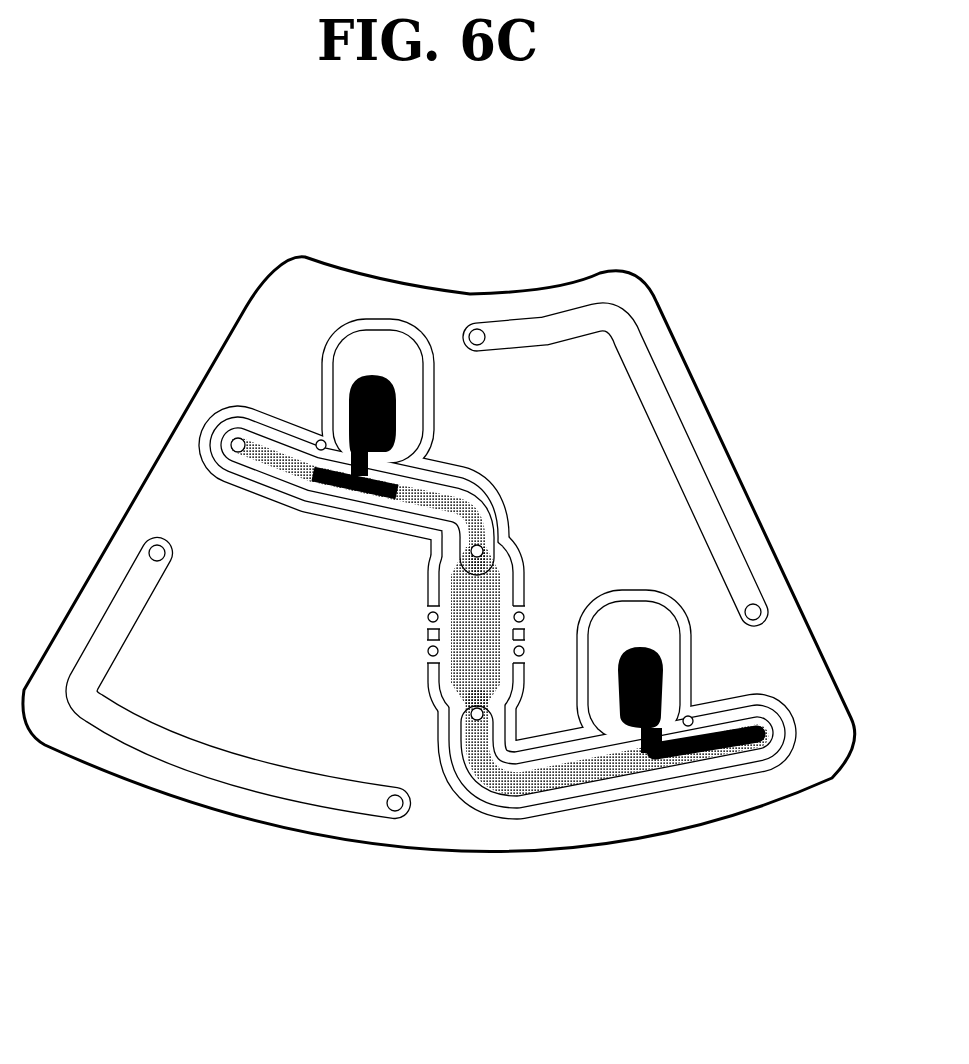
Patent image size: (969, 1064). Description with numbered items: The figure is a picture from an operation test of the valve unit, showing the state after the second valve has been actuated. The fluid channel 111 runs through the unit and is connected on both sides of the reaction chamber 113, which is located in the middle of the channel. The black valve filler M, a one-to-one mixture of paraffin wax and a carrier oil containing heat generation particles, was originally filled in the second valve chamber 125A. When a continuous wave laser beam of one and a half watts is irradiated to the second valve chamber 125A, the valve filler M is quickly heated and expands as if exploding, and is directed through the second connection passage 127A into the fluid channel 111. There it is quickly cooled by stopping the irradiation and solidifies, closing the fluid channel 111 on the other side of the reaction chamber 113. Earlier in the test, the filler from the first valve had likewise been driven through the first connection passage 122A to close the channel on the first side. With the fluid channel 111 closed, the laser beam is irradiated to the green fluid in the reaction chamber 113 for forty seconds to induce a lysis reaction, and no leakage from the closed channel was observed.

The fluid channel 111 is at (340, 493).
The reaction chamber 113 is at (457, 688).
The first connection passage 122A is at (652, 752).
The second valve chamber 125A is at (347, 392).
The second connection passage 127A is at (318, 440).
The valve filler M is at (228, 457).